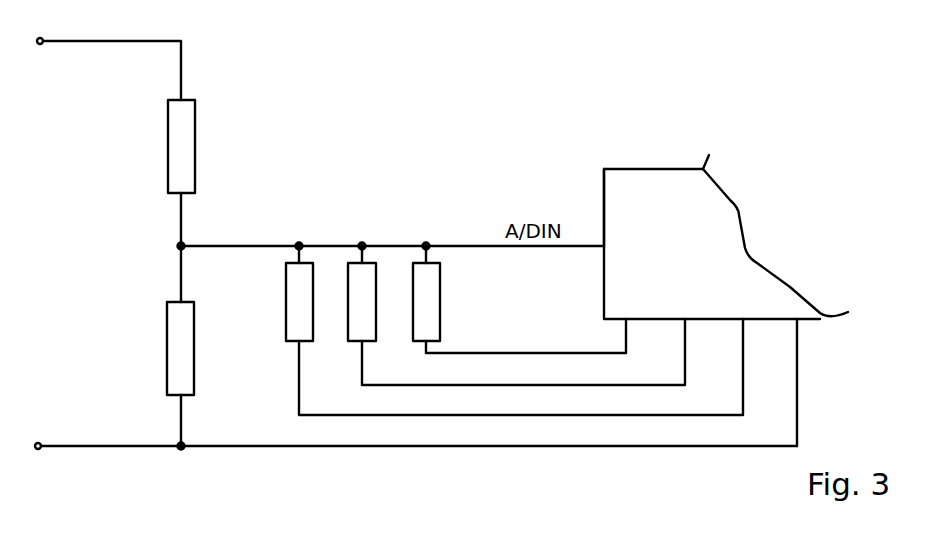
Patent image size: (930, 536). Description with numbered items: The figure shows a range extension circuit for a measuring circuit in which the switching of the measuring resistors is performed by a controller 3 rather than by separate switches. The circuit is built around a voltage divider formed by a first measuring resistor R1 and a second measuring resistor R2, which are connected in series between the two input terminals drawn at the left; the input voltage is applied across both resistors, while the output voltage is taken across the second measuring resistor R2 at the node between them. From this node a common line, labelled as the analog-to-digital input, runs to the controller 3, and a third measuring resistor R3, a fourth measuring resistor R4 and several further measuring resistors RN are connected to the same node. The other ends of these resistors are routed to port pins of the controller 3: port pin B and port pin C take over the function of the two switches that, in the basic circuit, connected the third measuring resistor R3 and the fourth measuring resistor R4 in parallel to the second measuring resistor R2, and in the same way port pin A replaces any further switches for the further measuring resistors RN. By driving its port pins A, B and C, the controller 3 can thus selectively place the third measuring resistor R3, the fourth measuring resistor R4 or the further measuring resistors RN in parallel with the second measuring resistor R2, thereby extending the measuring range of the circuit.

The controller 3 is at (726, 237).
The first measuring resistor R1 is at (199, 146).
The second measuring resistor R2 is at (198, 348).
The third measuring resistor R3 is at (514, 330).
The fourth measuring resistor R4 is at (516, 315).
The further measuring resistors RN is at (519, 299).
The port pin A is at (644, 334).
The port pin B is at (714, 339).
The port pin C is at (770, 339).